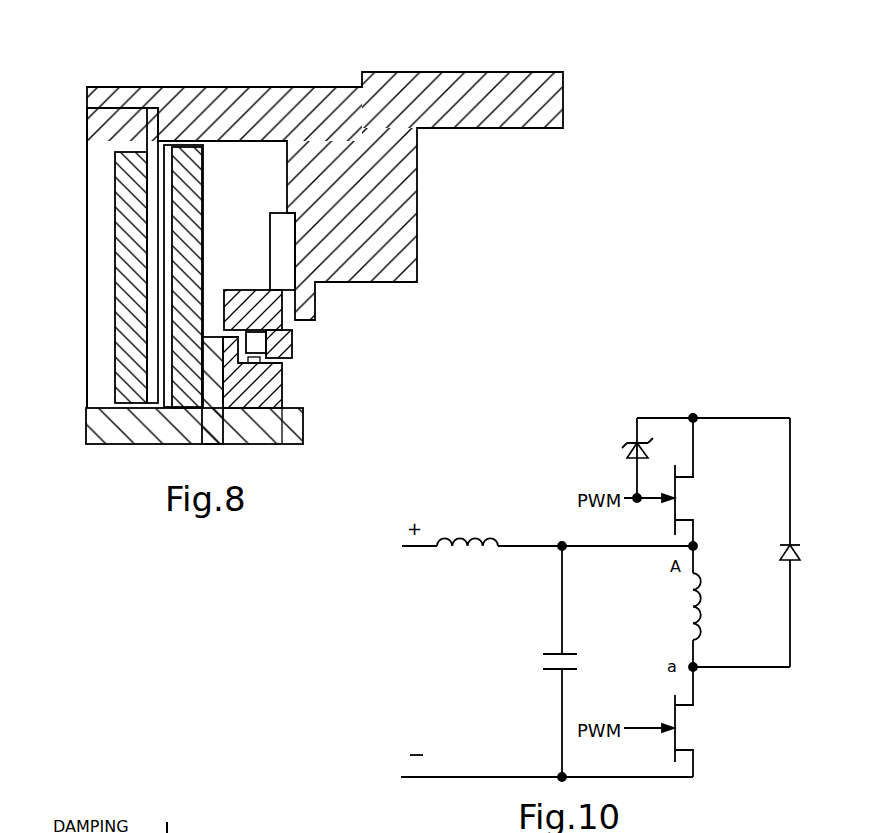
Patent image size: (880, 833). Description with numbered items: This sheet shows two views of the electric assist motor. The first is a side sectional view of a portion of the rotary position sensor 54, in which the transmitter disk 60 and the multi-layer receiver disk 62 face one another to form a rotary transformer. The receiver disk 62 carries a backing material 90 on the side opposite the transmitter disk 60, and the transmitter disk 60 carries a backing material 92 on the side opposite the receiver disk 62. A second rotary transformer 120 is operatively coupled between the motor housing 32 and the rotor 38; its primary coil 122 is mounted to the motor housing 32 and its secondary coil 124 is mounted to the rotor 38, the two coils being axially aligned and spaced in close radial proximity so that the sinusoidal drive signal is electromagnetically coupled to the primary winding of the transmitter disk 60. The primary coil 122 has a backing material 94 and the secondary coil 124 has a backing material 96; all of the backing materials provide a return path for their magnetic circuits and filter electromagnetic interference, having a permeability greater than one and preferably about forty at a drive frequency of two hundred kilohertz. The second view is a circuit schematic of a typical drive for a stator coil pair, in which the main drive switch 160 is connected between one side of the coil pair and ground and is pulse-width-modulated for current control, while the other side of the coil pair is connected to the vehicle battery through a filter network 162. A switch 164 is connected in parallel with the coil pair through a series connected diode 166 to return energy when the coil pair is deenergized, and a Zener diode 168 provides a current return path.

In FIG. 8, the motor housing 32 is at (418, 182).
In FIG. 8, the rotor 38 is at (257, 435).
In FIG. 8, the rotary position sensor 54 is at (105, 160).
In FIG. 8, the transmitter disk 60 is at (170, 163).
In FIG. 8, the receiver disk 62 is at (153, 127).
In FIG. 8, the backing material 90 is at (128, 281).
In FIG. 8, the backing material 92 is at (187, 220).
In FIG. 8, the backing material 94 is at (247, 300).
In FIG. 8, the backing material 96 is at (257, 393).
In FIG. 8, the second rotary transformer 120 is at (290, 345).
In FIG. 8, the primary coil 122 is at (262, 345).
In FIG. 8, the secondary coil 124 is at (260, 365).
In FIG. 10, the main drive switch 160 is at (692, 725).
In FIG. 10, the filter network 162 is at (508, 635).
In FIG. 10, the switch 164 is at (685, 498).
In FIG. 10, the diode 166 is at (800, 556).
In FIG. 10, the Zener diode 168 is at (627, 450).